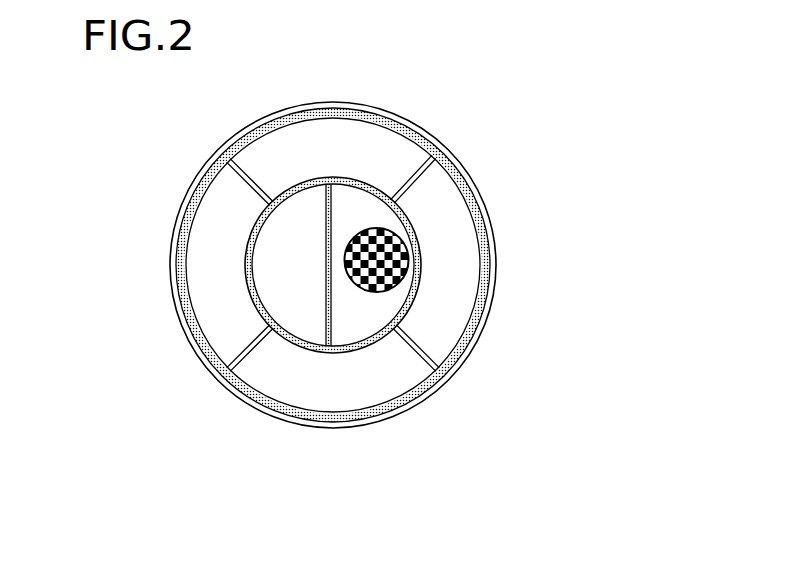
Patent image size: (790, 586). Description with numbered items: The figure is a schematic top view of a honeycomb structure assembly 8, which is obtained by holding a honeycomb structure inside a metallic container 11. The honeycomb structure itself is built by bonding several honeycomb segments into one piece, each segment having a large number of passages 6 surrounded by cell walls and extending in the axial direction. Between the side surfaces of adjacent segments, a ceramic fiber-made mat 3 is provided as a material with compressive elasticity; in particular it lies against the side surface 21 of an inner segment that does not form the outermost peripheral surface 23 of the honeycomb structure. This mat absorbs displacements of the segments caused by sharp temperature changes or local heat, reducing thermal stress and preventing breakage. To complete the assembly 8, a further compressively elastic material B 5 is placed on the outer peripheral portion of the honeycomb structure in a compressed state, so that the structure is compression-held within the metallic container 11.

The honeycomb structure assembly 8 is at (483, 160).
The metallic container 11 is at (495, 272).
The material B having compressive elasticity 5 is at (445, 380).
The outermost peripheral surface 23 is at (200, 344).
The side surface 21 is at (250, 259).
The passages 6 is at (386, 234).
The ceramic fiber-made mat 3 is at (425, 353).